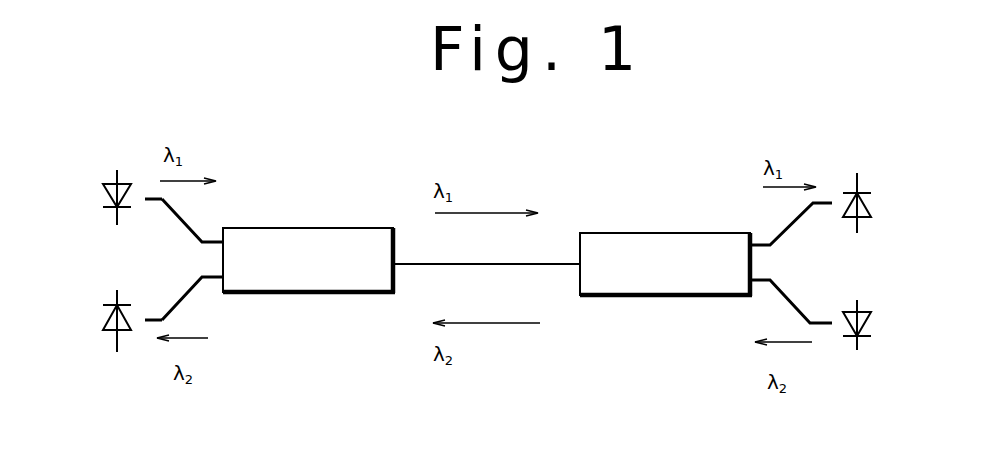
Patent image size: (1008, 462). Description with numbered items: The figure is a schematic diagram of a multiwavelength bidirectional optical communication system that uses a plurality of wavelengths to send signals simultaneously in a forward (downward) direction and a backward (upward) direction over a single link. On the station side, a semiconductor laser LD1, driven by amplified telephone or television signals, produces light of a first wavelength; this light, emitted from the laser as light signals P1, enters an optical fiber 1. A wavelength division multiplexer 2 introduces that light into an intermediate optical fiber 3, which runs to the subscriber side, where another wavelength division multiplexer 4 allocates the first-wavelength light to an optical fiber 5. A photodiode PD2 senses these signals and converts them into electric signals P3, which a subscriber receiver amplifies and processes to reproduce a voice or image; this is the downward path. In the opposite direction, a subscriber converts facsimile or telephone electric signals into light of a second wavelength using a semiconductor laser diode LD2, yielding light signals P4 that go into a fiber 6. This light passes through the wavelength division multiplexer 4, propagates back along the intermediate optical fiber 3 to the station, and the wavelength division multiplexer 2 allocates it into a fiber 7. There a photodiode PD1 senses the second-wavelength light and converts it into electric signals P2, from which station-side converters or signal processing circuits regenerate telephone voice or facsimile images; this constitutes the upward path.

The optical fiber 1 is at (191, 232).
The wavelength division multiplexer 2 is at (309, 260).
The intermediate optical fiber 3 is at (323, 263).
The wavelength division multiplexer 4 is at (666, 264).
The optical fiber 5 is at (799, 217).
The optical fiber 6 is at (806, 314).
The optical fiber 7 is at (176, 303).
The semiconductor laser LD1 is at (111, 182).
The photodiode PD1 is at (112, 339).
The semiconductor laser diode LD2 is at (856, 347).
The photodiode PD2 is at (850, 181).
The λ1 light emission P1 is at (102, 204).
The electric signals P2 is at (102, 314).
The electric signals P3 is at (897, 216).
The λ2 light signals P4 is at (897, 331).